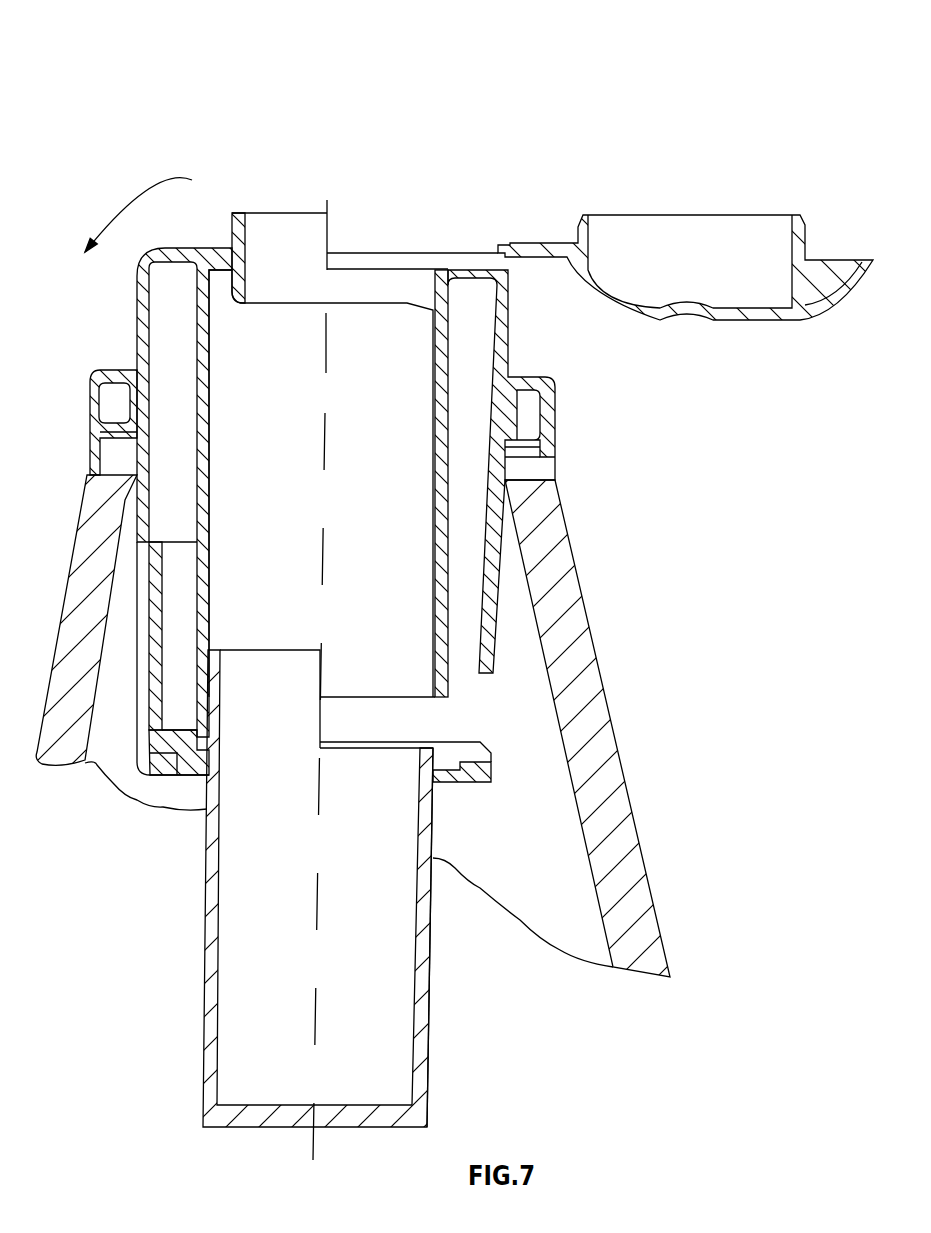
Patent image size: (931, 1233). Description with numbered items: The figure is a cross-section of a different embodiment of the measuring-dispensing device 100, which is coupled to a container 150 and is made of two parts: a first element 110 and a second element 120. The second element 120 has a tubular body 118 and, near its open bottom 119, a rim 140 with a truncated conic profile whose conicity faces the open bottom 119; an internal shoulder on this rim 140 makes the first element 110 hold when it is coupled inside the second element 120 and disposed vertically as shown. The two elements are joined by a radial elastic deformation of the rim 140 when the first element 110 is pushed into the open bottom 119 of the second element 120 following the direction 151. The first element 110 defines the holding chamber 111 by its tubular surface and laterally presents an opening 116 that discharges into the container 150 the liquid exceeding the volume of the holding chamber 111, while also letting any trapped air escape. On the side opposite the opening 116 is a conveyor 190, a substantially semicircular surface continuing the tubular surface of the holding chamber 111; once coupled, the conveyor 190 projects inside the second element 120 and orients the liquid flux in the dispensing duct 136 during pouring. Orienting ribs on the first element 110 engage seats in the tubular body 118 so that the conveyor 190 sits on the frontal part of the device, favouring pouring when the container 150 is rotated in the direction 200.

The measuring-dispensing device 100 is at (242, 163).
The direction of rotation 200 is at (150, 182).
The dispensing duct 136 is at (376, 386).
The tubular body 118 is at (503, 510).
The second element 120 is at (518, 644).
The container 150 is at (593, 720).
The opening 116 is at (485, 718).
The rim 140 is at (502, 784).
The first element 110 is at (438, 1064).
The holding chamber 111 is at (427, 943).
The open bottom 119 is at (264, 668).
The direction 151 is at (275, 835).
The conveyor 190 is at (208, 673).